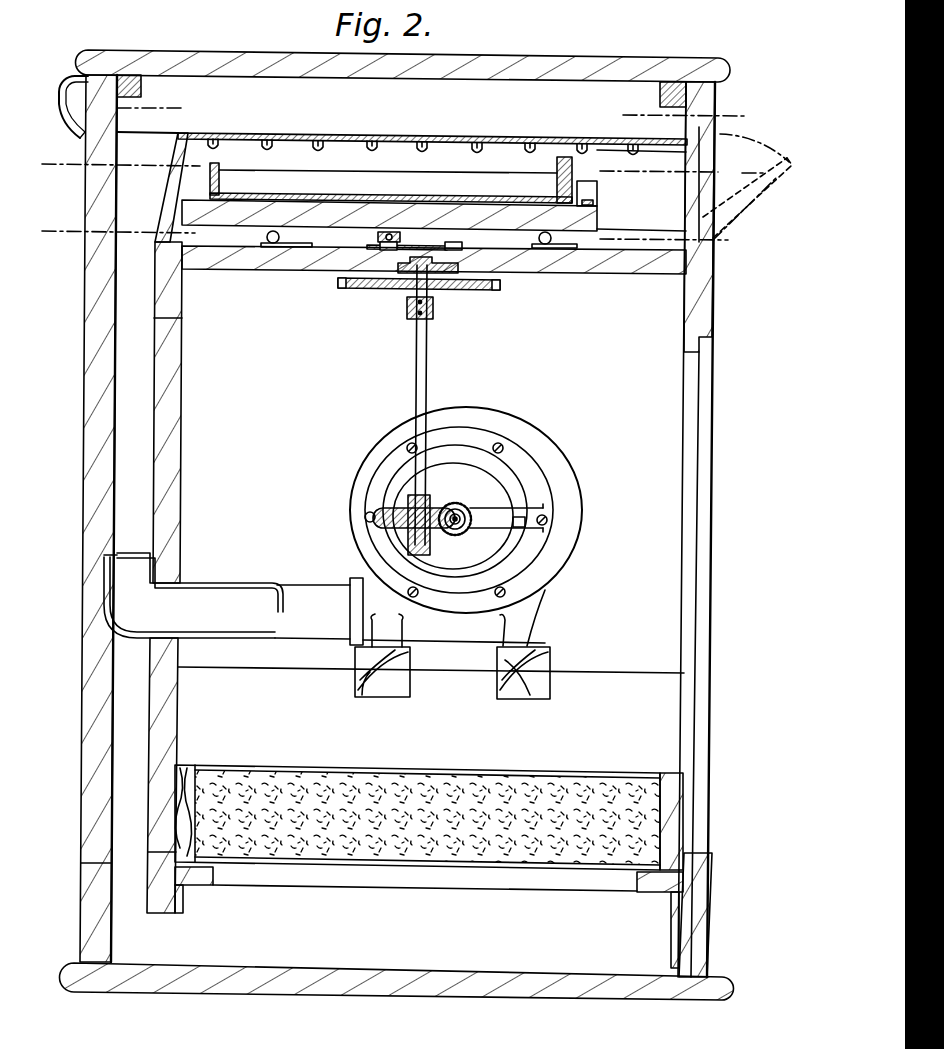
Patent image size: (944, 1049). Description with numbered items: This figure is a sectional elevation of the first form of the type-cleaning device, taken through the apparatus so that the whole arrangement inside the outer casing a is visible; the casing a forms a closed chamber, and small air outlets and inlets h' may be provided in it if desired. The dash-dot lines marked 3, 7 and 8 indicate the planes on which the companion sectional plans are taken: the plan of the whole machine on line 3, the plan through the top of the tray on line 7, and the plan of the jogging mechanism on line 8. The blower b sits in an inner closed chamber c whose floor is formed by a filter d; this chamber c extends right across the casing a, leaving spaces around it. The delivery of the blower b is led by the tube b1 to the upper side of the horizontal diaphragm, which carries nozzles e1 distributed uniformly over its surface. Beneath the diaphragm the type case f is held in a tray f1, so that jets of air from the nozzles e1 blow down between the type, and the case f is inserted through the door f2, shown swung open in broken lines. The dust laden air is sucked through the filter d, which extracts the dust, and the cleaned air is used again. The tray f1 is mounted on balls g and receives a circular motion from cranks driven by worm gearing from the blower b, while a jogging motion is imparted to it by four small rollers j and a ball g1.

The outer casing a is at (710, 326).
The section line 3— 3 is at (76, 107).
The air outlets and inlets h' is at (64, 112).
The section line 7— 7 is at (392, 171).
The section line 8— 8 is at (382, 240).
The nozzles e1 is at (213, 148).
The type case f is at (224, 191).
The tray f1 is at (518, 212).
The door f2 is at (738, 216).
The balls g is at (274, 244).
The ball g1 is at (380, 243).
The small rollers j is at (388, 248).
The inner closed chamber c is at (416, 577).
The blower b is at (527, 475).
The tube b1 is at (252, 573).
The filter d is at (410, 848).